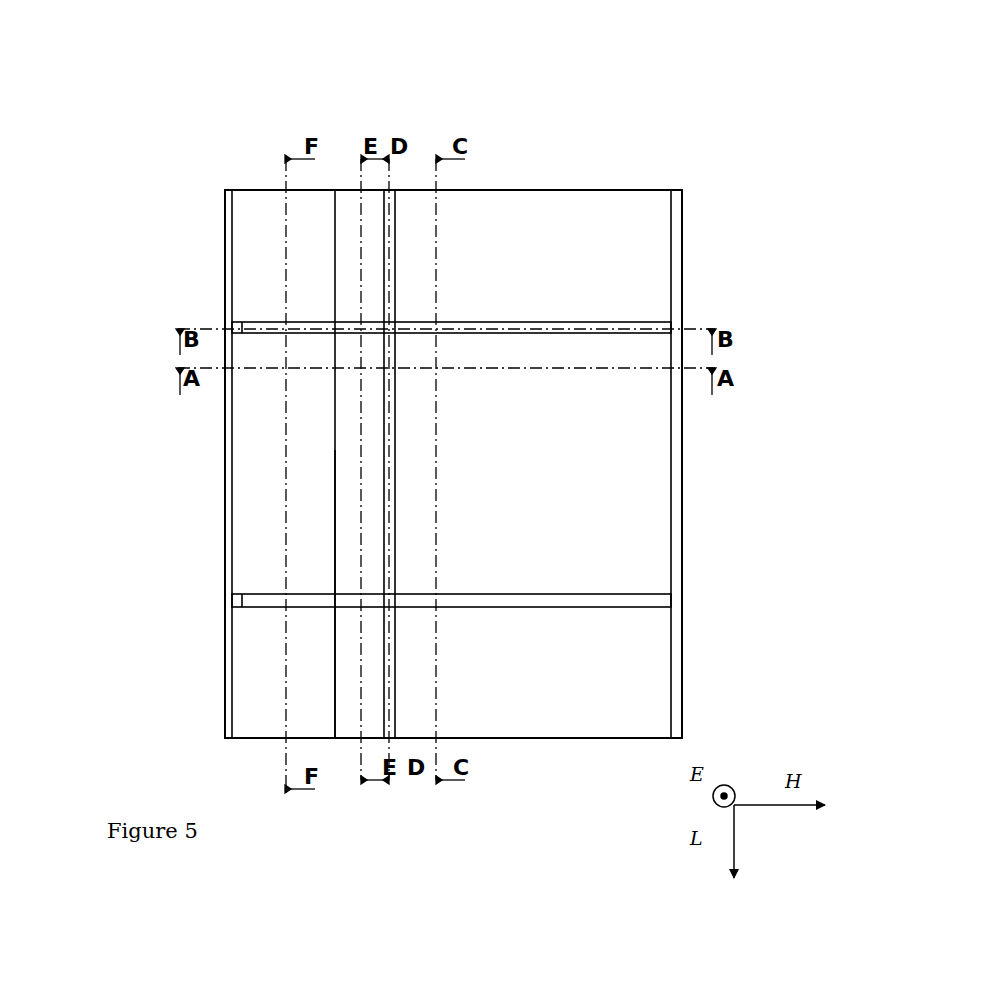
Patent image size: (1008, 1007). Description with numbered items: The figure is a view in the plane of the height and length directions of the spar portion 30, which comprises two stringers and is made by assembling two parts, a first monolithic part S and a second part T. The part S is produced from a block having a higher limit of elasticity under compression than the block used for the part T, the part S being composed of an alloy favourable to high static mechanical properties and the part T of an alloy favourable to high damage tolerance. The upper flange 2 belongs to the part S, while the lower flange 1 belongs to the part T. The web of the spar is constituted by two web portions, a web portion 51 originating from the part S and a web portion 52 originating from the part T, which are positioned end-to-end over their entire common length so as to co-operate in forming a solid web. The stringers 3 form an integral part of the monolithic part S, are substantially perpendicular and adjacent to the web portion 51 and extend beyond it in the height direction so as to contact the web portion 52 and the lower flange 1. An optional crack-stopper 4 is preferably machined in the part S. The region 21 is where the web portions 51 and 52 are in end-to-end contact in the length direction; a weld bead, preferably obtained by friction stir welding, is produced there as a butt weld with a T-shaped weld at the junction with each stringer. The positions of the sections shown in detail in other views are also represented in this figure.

The lower flange 1 is at (227, 247).
The upper flange 2 is at (677, 208).
The stringer 3 is at (599, 317).
The crack-stopper 4 is at (389, 200).
The region of end-to-end contact 21 is at (335, 515).
The spar portion 30 is at (550, 130).
The web portion 51 is at (564, 568).
The web portion 52 is at (311, 217).
The second part T is at (285, 700).
The first monolithic part S is at (630, 685).